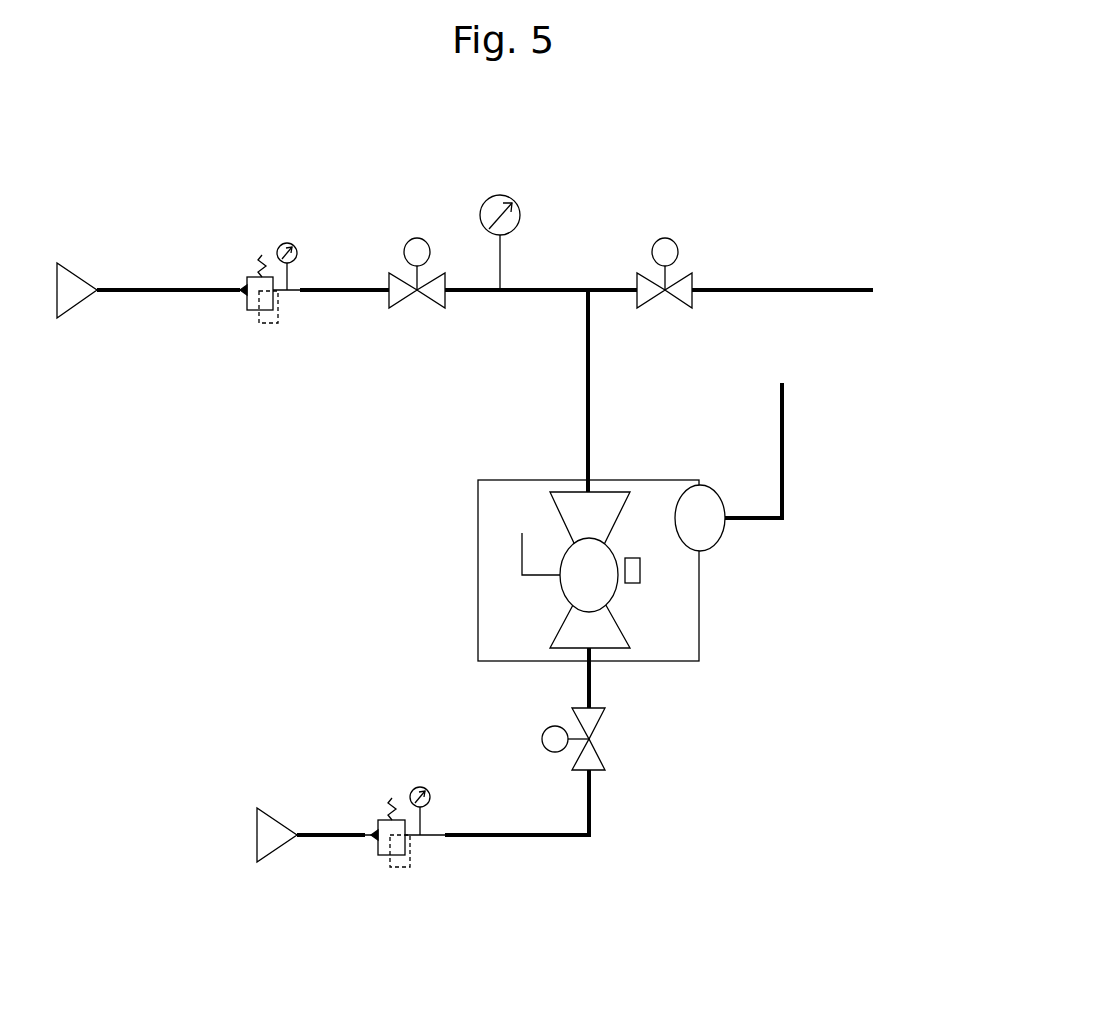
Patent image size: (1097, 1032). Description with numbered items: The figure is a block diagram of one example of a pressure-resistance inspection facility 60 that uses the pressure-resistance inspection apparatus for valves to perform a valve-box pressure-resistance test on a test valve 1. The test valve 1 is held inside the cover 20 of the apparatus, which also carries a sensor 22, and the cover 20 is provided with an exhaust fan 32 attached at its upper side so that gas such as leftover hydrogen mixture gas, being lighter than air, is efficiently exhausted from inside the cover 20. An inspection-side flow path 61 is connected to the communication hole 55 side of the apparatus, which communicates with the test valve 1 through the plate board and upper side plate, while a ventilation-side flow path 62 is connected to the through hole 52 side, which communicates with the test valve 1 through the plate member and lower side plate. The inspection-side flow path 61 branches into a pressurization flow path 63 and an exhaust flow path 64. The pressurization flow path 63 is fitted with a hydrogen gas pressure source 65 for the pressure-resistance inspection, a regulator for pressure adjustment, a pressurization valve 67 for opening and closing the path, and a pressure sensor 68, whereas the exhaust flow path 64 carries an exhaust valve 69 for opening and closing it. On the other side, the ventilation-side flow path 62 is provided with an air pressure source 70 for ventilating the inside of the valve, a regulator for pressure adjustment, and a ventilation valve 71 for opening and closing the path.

The test valve 1 is at (560, 585).
The cover 20 is at (478, 520).
The sensor 22 is at (640, 570).
The exhaust fan 32 is at (705, 532).
The through hole 52 is at (592, 672).
The communication hole 55 is at (590, 480).
The pressure-resistance inspection facility 60 is at (500, 880).
The inspection-side flow path 61 is at (588, 378).
The ventilation-side flow path 62 is at (565, 838).
The pressurization flow path 63 is at (148, 290).
The exhaust flow path 64 is at (787, 290).
The hydrogen gas pressure source 65 is at (72, 296).
The pressurization valve 67 is at (413, 250).
The pressure sensor 68 is at (495, 215).
The exhaust valve 69 is at (665, 250).
The air pressure source 70 is at (270, 840).
The ventilation valve 71 is at (590, 758).